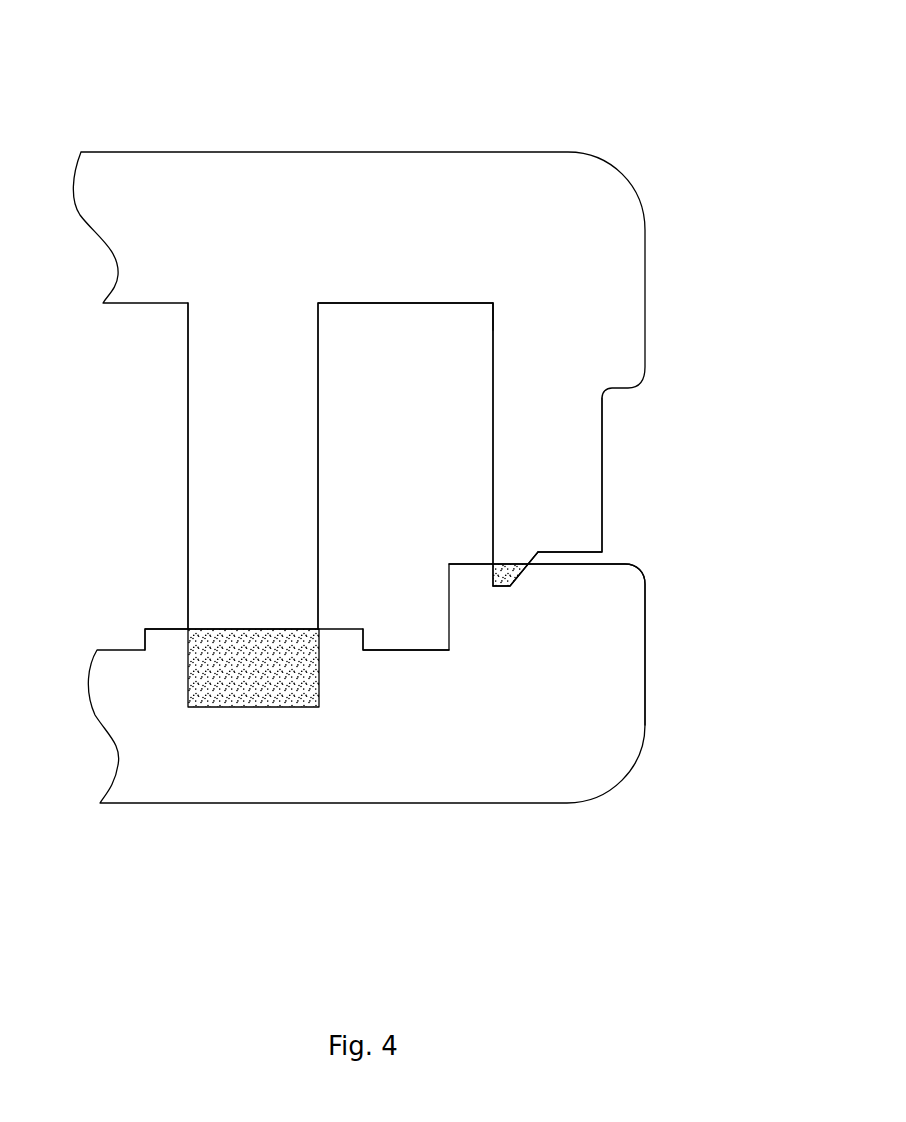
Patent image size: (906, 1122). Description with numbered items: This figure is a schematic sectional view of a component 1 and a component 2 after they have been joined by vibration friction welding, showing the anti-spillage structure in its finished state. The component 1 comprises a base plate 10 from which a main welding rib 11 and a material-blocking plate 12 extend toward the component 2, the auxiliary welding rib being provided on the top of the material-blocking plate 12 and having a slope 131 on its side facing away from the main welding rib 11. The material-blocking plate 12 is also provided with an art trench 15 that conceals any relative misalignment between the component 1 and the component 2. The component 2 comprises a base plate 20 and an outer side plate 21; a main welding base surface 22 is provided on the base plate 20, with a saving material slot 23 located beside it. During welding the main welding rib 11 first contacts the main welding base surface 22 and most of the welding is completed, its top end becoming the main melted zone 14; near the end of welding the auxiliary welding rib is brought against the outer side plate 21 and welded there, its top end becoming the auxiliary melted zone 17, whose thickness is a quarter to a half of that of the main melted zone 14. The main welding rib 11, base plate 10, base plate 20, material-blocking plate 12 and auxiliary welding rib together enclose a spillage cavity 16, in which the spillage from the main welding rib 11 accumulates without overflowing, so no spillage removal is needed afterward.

The component 1 is at (217, 105).
The component 2 is at (207, 865).
The base plate 10 is at (433, 195).
The main welding rib 11 is at (188, 422).
The material-blocking plate 12 is at (520, 452).
The slope 131 is at (522, 572).
The main melted zone 14 is at (247, 687).
The art trench 15 is at (602, 458).
The spillage cavity 16 is at (440, 365).
The auxiliary melted zone 17 is at (505, 587).
The base plate 20 is at (397, 768).
The outer side plate 21 is at (600, 687).
The main welding base surface 22 is at (160, 628).
The saving material slot 23 is at (412, 652).